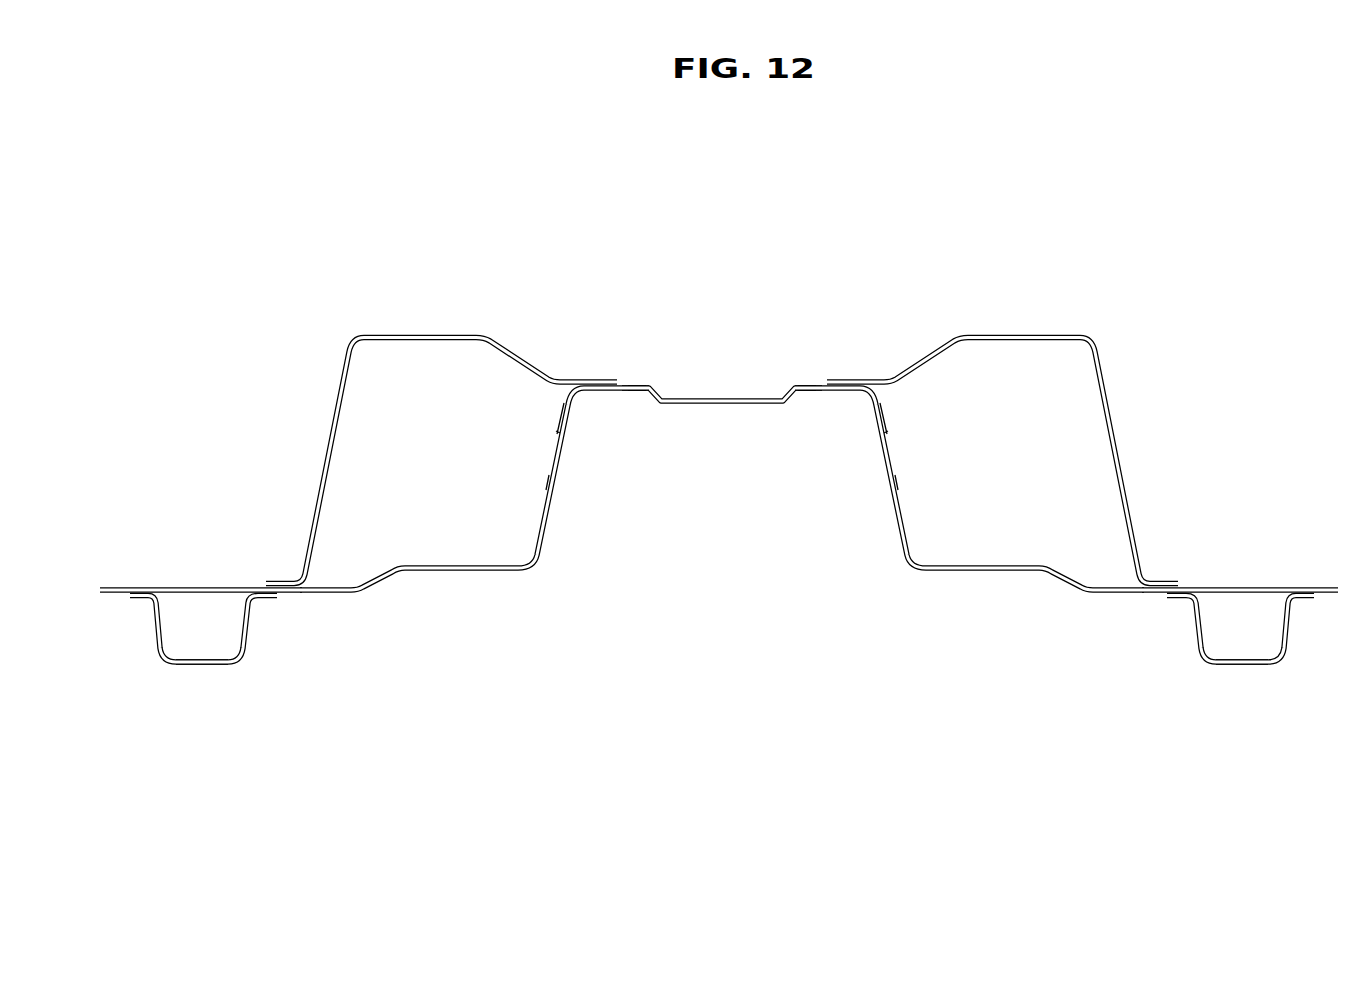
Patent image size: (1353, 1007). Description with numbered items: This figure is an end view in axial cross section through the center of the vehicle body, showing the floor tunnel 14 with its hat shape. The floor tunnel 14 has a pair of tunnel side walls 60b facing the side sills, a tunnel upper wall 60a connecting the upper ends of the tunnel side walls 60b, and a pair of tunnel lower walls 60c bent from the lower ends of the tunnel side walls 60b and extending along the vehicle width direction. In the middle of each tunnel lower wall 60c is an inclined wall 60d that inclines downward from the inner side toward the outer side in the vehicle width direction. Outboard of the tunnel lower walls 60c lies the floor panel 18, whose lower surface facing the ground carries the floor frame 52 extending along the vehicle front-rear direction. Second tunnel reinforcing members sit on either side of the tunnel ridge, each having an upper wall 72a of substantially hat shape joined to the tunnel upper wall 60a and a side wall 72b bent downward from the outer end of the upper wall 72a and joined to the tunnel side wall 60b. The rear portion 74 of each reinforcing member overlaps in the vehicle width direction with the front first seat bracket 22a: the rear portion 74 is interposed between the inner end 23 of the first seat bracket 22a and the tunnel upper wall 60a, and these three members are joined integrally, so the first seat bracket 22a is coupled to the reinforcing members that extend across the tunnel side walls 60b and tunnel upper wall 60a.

The floor tunnel 14 is at (545, 472).
The floor panel 18 is at (193, 587).
The first seat bracket 22a is at (400, 320).
The inner end 23 is at (593, 378).
The floor frame 52 is at (195, 667).
The tunnel upper wall 60a is at (702, 400).
The tunnel side walls 60b is at (566, 460).
The tunnel lower walls 60c is at (308, 598).
The inclined wall 60d is at (385, 584).
The upper wall 72a is at (622, 380).
The side wall 72b is at (562, 412).
The rear portion 74 is at (636, 383).